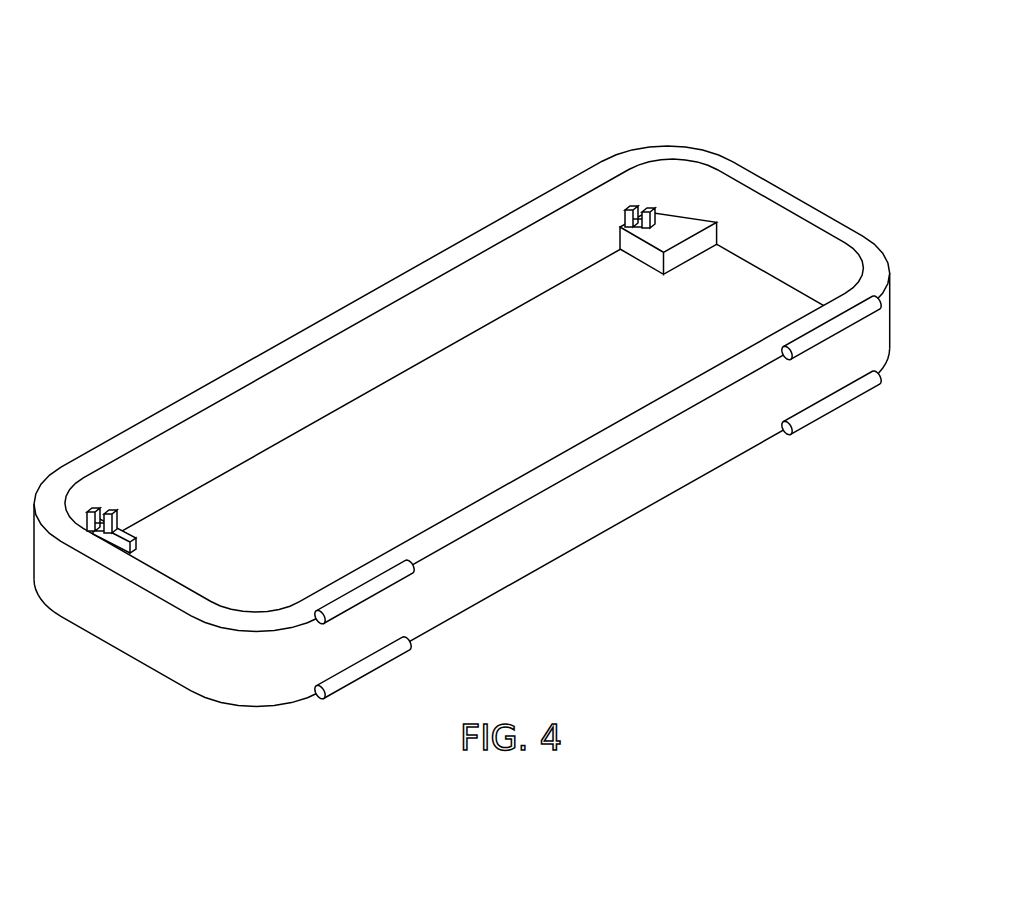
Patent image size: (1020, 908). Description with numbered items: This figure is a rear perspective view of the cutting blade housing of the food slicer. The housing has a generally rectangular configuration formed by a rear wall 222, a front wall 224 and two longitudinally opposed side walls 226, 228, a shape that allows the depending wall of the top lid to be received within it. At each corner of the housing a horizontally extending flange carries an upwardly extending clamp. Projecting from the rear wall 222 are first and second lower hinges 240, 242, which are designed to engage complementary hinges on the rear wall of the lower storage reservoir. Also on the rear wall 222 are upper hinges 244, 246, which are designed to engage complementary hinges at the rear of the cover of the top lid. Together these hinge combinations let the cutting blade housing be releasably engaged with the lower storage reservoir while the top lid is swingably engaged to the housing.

The rear wall 222 is at (630, 503).
The front wall 224 is at (268, 349).
The side wall 226 is at (756, 163).
The side wall 228 is at (130, 627).
The first lower hinge 240 is at (412, 646).
The second lower hinge 242 is at (811, 430).
The upper hinge 244 is at (360, 589).
The upper hinge 246 is at (800, 344).